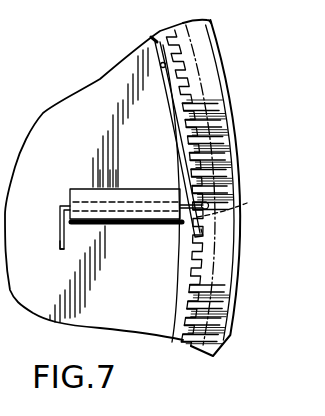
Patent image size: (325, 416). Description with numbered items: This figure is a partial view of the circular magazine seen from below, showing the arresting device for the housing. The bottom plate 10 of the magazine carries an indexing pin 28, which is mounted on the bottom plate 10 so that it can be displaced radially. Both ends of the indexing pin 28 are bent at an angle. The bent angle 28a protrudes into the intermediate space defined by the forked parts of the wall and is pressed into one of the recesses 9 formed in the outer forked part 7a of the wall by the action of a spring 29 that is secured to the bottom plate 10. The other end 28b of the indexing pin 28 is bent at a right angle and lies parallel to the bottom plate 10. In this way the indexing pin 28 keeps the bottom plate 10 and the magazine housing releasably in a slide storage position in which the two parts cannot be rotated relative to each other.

The bottom plate 10 is at (88, 152).
The indexing pin 28 is at (58, 207).
The bent angle 28a is at (208, 204).
The other end of the indexing pin 28b is at (58, 247).
The recesses 9 is at (212, 163).
The spring 29 is at (180, 147).
The outer forked part of the wall 7a is at (248, 206).